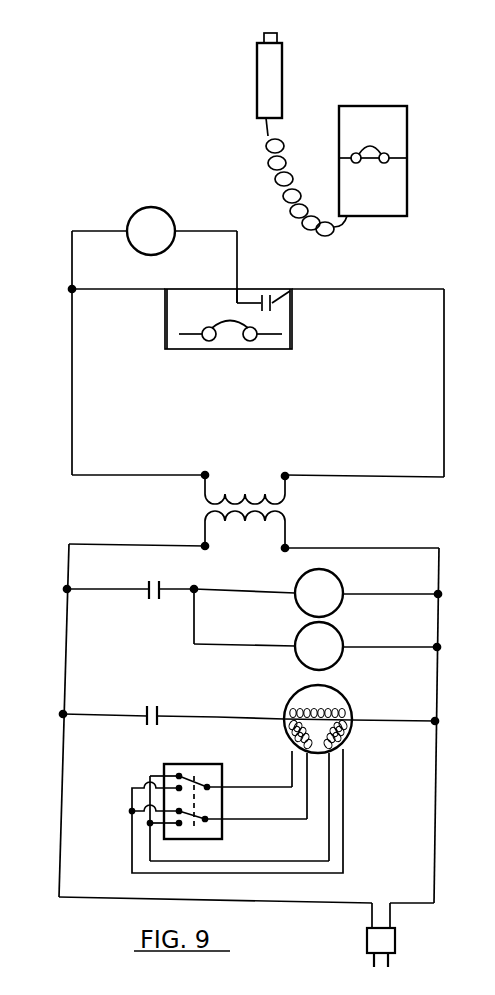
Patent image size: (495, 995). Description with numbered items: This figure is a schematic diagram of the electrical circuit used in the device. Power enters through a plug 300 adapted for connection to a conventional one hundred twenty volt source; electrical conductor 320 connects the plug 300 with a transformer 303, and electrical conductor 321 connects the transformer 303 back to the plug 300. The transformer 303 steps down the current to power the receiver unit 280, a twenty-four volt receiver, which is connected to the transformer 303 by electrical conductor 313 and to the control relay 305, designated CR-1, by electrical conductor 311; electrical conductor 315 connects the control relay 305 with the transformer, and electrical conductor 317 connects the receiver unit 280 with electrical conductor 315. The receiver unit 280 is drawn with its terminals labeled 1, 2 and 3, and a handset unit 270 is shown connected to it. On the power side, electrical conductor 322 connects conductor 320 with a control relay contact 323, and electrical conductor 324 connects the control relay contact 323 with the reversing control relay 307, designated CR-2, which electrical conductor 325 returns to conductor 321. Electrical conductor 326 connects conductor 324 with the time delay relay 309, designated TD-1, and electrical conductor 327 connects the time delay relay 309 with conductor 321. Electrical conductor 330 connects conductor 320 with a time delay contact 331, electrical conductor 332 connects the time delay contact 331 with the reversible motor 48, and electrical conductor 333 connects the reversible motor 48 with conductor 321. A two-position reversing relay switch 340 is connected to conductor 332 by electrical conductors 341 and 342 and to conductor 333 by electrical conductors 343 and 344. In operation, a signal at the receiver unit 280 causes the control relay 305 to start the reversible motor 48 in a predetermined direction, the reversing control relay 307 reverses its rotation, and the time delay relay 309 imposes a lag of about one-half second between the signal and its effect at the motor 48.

The telephone handset and jack 270 is at (404, 165).
The receiver unit 280 is at (283, 340).
The plug 300 is at (368, 940).
The transformer 303 is at (240, 500).
The control relay 305 is at (142, 208).
The reversing control relay 307 is at (335, 573).
The time delay relay 309 is at (335, 665).
The electrical conductor 311 is at (226, 230).
The electrical conductor 313 is at (380, 288).
The electrical conductor 315 is at (70, 258).
The electrical conductor 317 is at (138, 285).
The electrical conductor 320 is at (62, 665).
The electrical conductor 321 is at (434, 700).
The electrical conductor 322 is at (128, 586).
The control relay contact 323 is at (158, 583).
The electrical conductor 324 is at (208, 588).
The electrical conductor 325 is at (375, 593).
The electrical conductor 326 is at (212, 642).
The electrical conductor 327 is at (365, 645).
The electrical conductor 330 is at (122, 712).
The time delay contact 331 is at (155, 706).
The electrical conductor 332 is at (215, 714).
The electrical conductor 333 is at (418, 722).
The two-position reversing relay switch 340 is at (162, 770).
The electrical conductor 341 is at (285, 787).
The electrical conductor 342 is at (300, 818).
The electrical conductor 343 is at (302, 860).
The electrical conductor 344 is at (302, 873).
The reversible motor 48 is at (347, 703).
The terminal 1 is at (167, 308).
The terminal 2 is at (245, 285).
The terminal 3 is at (294, 308).